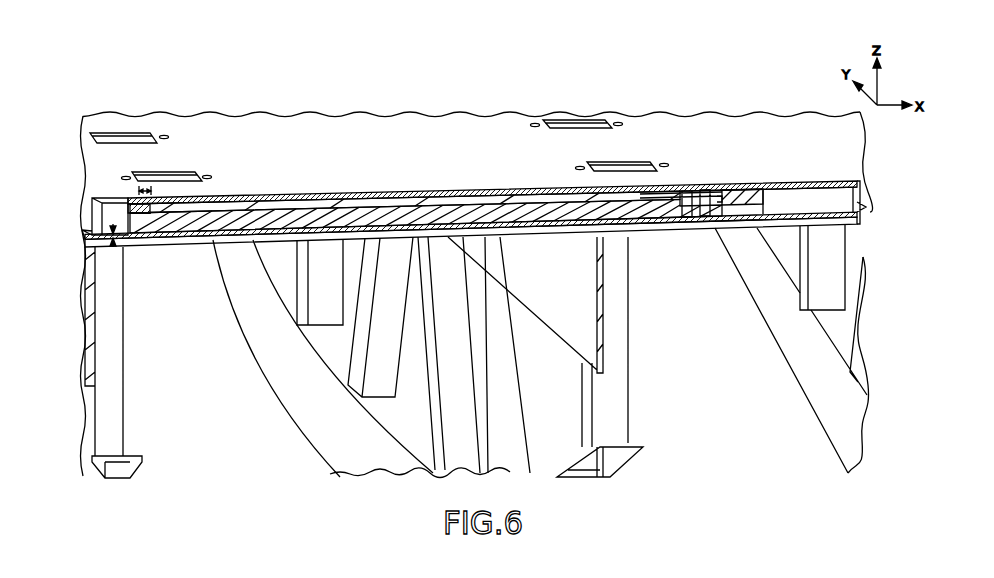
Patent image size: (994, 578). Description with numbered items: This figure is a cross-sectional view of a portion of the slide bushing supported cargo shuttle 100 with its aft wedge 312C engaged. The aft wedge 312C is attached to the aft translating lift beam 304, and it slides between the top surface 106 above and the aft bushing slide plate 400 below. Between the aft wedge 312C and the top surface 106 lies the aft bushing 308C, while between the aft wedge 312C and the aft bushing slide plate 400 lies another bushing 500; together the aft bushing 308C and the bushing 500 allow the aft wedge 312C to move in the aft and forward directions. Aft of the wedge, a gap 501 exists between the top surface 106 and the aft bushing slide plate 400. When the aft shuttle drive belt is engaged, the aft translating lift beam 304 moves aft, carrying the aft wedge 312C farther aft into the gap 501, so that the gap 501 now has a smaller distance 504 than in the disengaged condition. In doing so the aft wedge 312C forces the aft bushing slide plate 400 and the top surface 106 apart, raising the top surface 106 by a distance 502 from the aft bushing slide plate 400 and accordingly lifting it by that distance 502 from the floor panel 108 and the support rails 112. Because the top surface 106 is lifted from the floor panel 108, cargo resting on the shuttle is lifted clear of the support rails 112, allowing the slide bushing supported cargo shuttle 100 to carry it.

The slide bushing supported cargo shuttle 100 is at (380, 127).
The top surface 106 is at (777, 158).
The floor panel 108 is at (170, 242).
The support rails 112 is at (118, 310).
The aft translating lift beam 304 is at (748, 200).
The aft bushing 308C is at (462, 193).
The aft wedge 312C is at (505, 203).
The aft bushing slide plate 400 is at (248, 237).
The bushing 500 is at (488, 207).
The gap 501 is at (139, 209).
The distance 502 is at (113, 225).
The distance 504 is at (145, 188).